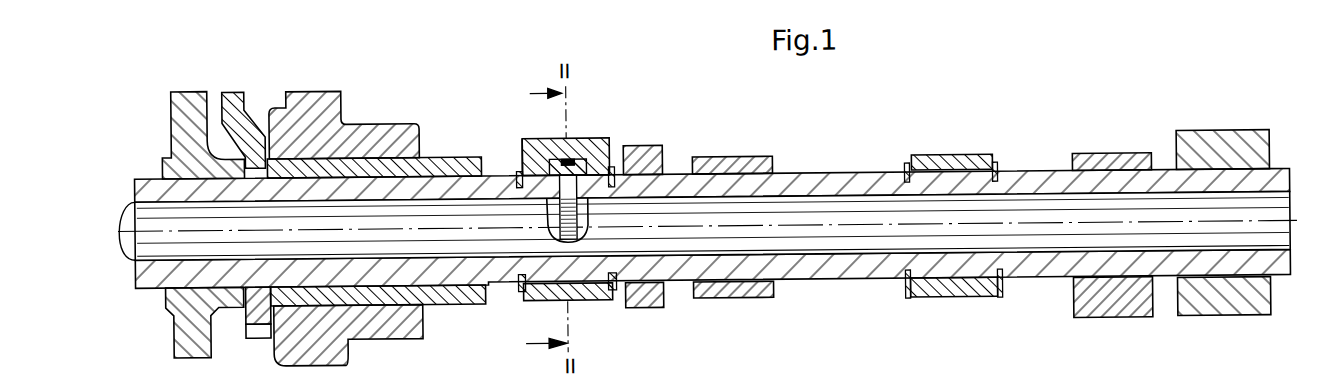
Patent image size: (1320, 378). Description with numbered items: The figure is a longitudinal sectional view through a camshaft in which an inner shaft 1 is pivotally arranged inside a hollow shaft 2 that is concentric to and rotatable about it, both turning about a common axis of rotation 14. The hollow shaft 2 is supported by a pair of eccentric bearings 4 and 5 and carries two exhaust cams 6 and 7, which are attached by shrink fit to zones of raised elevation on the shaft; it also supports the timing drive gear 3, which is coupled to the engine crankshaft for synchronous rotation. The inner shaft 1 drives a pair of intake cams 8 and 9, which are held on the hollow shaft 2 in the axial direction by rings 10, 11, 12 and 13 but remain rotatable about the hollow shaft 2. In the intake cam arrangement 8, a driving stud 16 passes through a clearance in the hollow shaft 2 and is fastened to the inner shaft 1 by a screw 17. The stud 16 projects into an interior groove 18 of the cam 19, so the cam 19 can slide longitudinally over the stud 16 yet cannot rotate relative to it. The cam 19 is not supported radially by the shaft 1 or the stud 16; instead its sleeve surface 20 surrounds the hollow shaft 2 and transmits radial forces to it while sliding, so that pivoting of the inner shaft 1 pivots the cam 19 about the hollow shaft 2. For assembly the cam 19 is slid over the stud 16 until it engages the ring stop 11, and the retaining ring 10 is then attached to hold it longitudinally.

The inner shaft 1 is at (855, 204).
The hollow shaft 2 is at (1026, 172).
The timing drive gear 3 is at (370, 134).
The eccentric bearing 4 is at (647, 300).
The eccentric bearing 5 is at (1253, 308).
The exhaust cam 6 is at (757, 165).
The exhaust cam 7 is at (1133, 160).
The intake cam 8 is at (543, 134).
The intake cam 9 is at (975, 155).
The ring 10 is at (520, 292).
The ring 11 is at (614, 291).
The ring 12 is at (908, 288).
The ring 13 is at (1000, 288).
The axis of rotation 14 is at (1128, 226).
The driving stud 16 is at (549, 199).
The screw 17 is at (589, 202).
The interior groove 18 is at (598, 162).
The cam 19 is at (524, 152).
The sleeve surface 20 is at (518, 184).